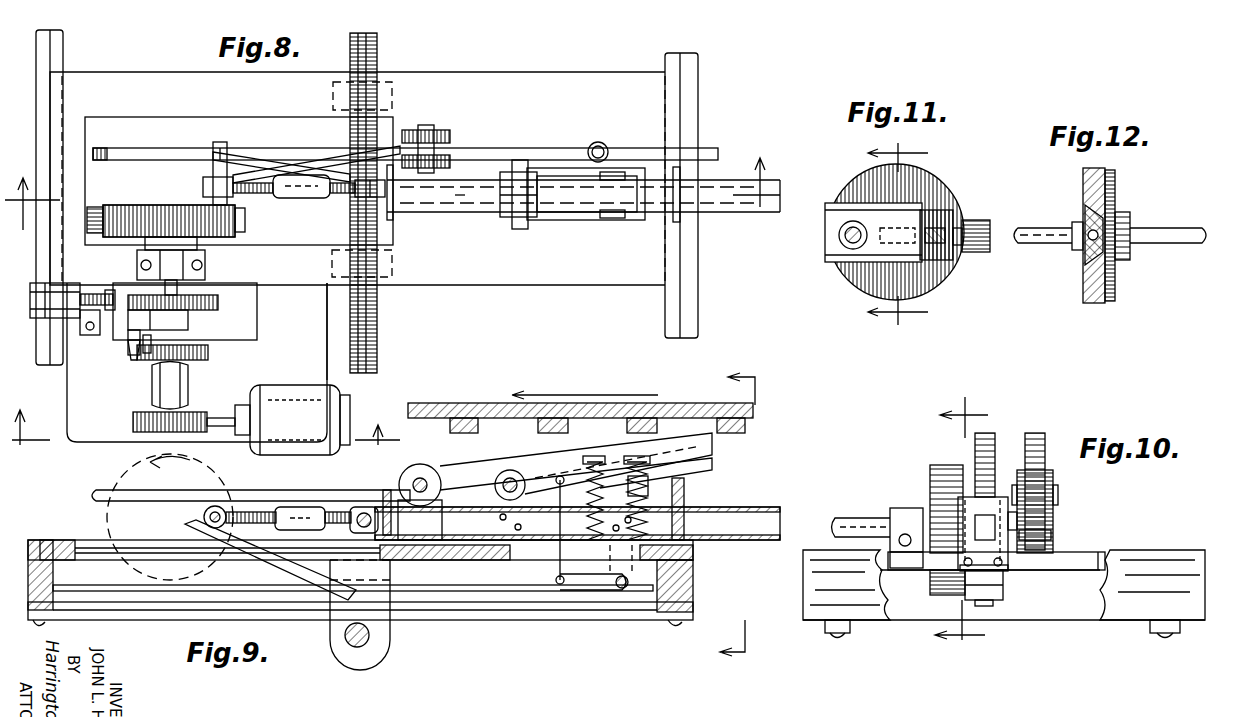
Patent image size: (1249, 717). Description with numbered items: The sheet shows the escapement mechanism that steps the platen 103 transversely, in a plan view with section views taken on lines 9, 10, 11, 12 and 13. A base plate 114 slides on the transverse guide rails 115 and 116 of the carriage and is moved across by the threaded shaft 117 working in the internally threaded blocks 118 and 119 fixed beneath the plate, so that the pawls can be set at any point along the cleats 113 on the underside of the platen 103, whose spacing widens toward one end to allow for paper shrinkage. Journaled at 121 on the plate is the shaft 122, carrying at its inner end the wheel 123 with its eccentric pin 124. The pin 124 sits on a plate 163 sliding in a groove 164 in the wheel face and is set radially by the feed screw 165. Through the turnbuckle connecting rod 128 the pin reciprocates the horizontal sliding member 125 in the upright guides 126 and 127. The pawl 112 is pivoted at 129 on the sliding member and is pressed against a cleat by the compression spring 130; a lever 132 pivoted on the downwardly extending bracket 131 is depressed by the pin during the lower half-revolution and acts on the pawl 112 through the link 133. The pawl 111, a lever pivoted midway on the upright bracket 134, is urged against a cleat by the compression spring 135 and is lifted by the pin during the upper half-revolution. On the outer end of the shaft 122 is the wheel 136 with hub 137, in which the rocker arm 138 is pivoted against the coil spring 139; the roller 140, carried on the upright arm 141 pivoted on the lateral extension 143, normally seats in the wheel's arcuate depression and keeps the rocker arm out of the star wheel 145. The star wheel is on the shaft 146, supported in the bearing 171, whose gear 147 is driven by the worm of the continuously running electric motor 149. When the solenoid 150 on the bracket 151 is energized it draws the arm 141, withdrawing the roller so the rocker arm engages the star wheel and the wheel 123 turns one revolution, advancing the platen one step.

In FIG. 8, the section line 9— 9 is at (392, 192).
In FIG. 9, the section line 10— 10 is at (723, 513).
In FIG. 10, the section line 11— 11 is at (961, 525).
In FIG. 11, the section line 12— 12 is at (898, 232).
In FIG. 8, the section line 13— 13 is at (206, 423).
In FIG. 9, the platen 103 is at (757, 412).
In FIG. 8, the pawl 111 is at (485, 146).
In FIG. 9, the pawl 111 is at (606, 441).
In FIG. 10, the pawl 111 is at (1040, 435).
In FIG. 8, the pawl 112 is at (706, 193).
In FIG. 9, the pawl 112 is at (716, 446).
In FIG. 10, the pawl 112 is at (992, 435).
In FIG. 9, the cleats 113 is at (487, 418).
In FIG. 8, the base plate 114 is at (522, 280).
In FIG. 9, the base plate 114 is at (60, 540).
In FIG. 10, the base plate 114 is at (1085, 562).
In FIG. 8, the transverse guide rail 115 is at (40, 364).
In FIG. 9, the transverse guide rail 115 is at (31, 540).
In FIG. 10, the transverse guide rail 115 is at (910, 605).
In FIG. 8, the transverse guide rail 116 is at (665, 313).
In FIG. 9, the transverse guide rail 116 is at (694, 572).
In FIG. 10, the transverse guide rail 116 is at (825, 598).
In FIG. 8, the threaded shaft 117 is at (380, 305).
In FIG. 9, the threaded shaft 117 is at (368, 652).
In FIG. 8, the internally threaded block 118 is at (393, 273).
In FIG. 8, the internally threaded block 119 is at (395, 83).
In FIG. 9, the internally threaded block 119 is at (390, 640).
In FIG. 8, the journal 121 is at (206, 263).
In FIG. 10, the journal 121 is at (910, 508).
In FIG. 8, the shaft 122 is at (180, 286).
In FIG. 10, the shaft 122 is at (850, 518).
In FIG. 12, the shaft 122 is at (1170, 230).
In FIG. 8, the wheel 123 is at (240, 232).
In FIG. 9, the wheel 123 is at (122, 471).
In FIG. 10, the wheel 123 is at (933, 470).
In FIG. 11, the wheel 123 is at (865, 283).
In FIG. 12, the wheel 123 is at (1083, 300).
In FIG. 8, the eccentric pin 124 is at (210, 164).
In FIG. 9, the eccentric pin 124 is at (204, 517).
In FIG. 10, the eccentric pin 124 is at (1012, 520).
In FIG. 11, the eccentric pin 124 is at (852, 222).
In FIG. 12, the eccentric pin 124 is at (1075, 250).
In FIG. 8, the horizontal sliding member 125 is at (505, 206).
In FIG. 9, the horizontal sliding member 125 is at (758, 507).
In FIG. 10, the horizontal sliding member 125 is at (992, 597).
In FIG. 8, the upright guide 126 is at (392, 221).
In FIG. 9, the upright guide 126 is at (386, 490).
In FIG. 8, the upright guide 127 is at (681, 219).
In FIG. 9, the upright guide 127 is at (685, 497).
In FIG. 8, the connecting rod 128 is at (336, 198).
In FIG. 9, the connecting rod 128 is at (305, 506).
In FIG. 8, the pivot 129 is at (526, 216).
In FIG. 9, the pivot 129 is at (514, 470).
In FIG. 8, the compression spring 130 is at (648, 168).
In FIG. 9, the compression spring 130 is at (650, 478).
In FIG. 10, the compression spring 130 is at (972, 482).
In FIG. 9, the downwardly extending bracket 131 is at (640, 590).
In FIG. 10, the downwardly extending bracket 131 is at (1005, 572).
In FIG. 8, the lever 132 is at (460, 200).
In FIG. 9, the lever 132 is at (530, 591).
In FIG. 10, the lever 132 is at (982, 606).
In FIG. 9, the link 133 is at (572, 565).
In FIG. 8, the upright bracket 134 is at (432, 128).
In FIG. 9, the upright bracket 134 is at (418, 466).
In FIG. 10, the upright bracket 134 is at (1052, 497).
In FIG. 8, the compression spring 135 is at (600, 142).
In FIG. 9, the compression spring 135 is at (648, 492).
In FIG. 10, the compression spring 135 is at (1045, 537).
In FIG. 8, the wheel 136 is at (219, 302).
In FIG. 8, the hub 137 is at (190, 320).
In FIG. 8, the rocker arm 138 is at (131, 360).
In FIG. 8, the coil spring 139 is at (145, 354).
In FIG. 8, the roller 140 is at (102, 326).
In FIG. 8, the upright arm 141 is at (112, 290).
In FIG. 8, the lateral extension 143 is at (378, 345).
In FIG. 8, the star wheel 145 is at (209, 352).
In FIG. 8, the shaft 146 is at (206, 418).
In FIG. 8, the gear 147 is at (133, 423).
In FIG. 8, the electric motor 149 is at (292, 420).
In FIG. 8, the solenoid 150 is at (58, 285).
In FIG. 8, the bracket 151 is at (126, 340).
In FIG. 8, the plate 163 is at (240, 219).
In FIG. 11, the plate 163 is at (828, 242).
In FIG. 12, the plate 163 is at (1083, 218).
In FIG. 11, the groove 164 is at (936, 210).
In FIG. 12, the groove 164 is at (1090, 275).
In FIG. 8, the feed screw 165 is at (98, 207).
In FIG. 11, the feed screw 165 is at (940, 262).
In FIG. 12, the feed screw 165 is at (1105, 218).
In FIG. 8, the bearing 171 is at (189, 369).